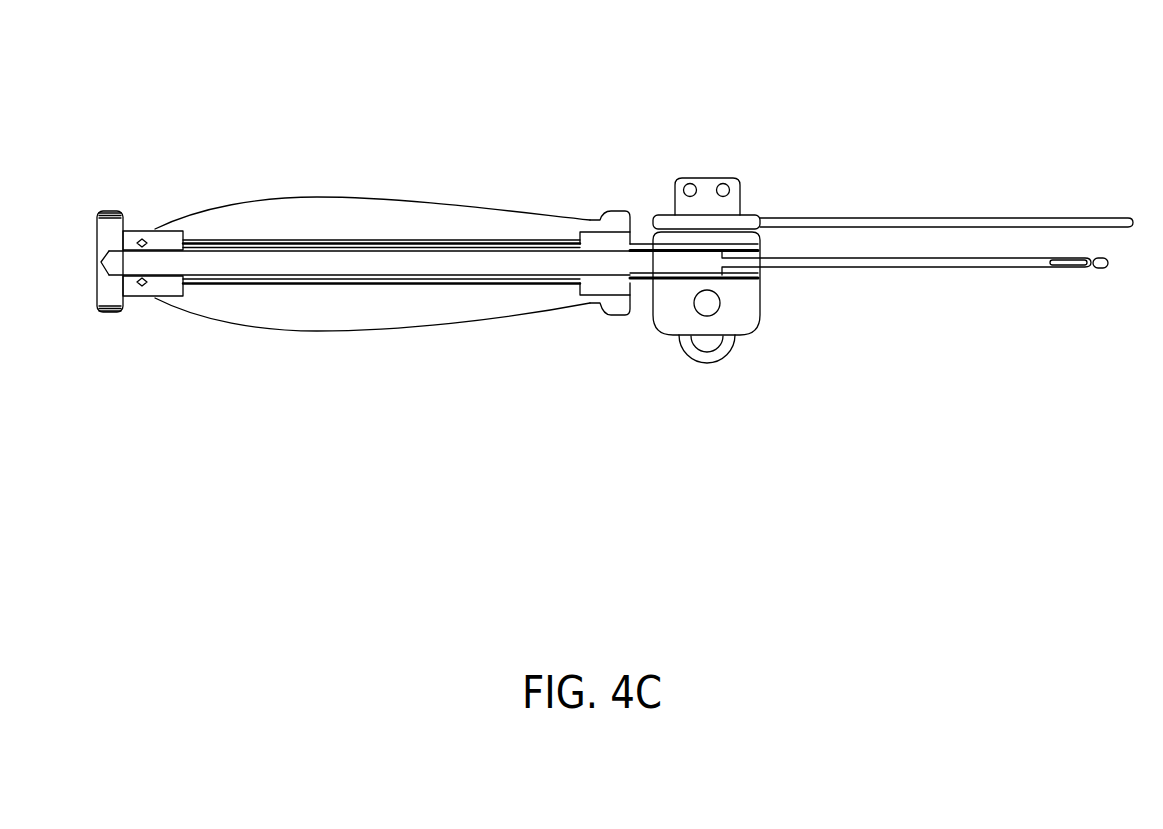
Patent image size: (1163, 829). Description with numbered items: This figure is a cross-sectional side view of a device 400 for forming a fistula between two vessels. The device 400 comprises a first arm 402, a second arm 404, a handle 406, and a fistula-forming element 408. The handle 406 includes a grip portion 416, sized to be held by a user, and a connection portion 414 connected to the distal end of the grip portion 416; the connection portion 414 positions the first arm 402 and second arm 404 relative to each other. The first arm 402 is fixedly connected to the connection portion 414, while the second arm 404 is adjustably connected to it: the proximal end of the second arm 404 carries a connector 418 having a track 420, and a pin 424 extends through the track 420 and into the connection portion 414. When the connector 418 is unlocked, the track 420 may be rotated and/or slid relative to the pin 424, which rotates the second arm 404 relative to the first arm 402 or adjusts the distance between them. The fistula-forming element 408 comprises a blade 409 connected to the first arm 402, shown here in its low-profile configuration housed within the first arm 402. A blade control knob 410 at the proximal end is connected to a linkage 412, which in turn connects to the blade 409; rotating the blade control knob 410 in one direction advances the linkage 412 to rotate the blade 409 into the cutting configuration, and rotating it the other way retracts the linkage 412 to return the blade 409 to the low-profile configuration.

The device 400 is at (476, 395).
The first arm 402 is at (913, 268).
The second arm 404 is at (935, 215).
The handle 406 is at (368, 362).
The fistula-forming element 408 is at (1053, 300).
The blade 409 is at (1064, 266).
The blade control knob 410 is at (115, 295).
The linkage 412 is at (467, 260).
The connection portion 414 is at (676, 308).
The grip portion 416 is at (399, 213).
The connector 418 is at (712, 176).
The track 420 is at (711, 343).
The pin 424 is at (714, 314).